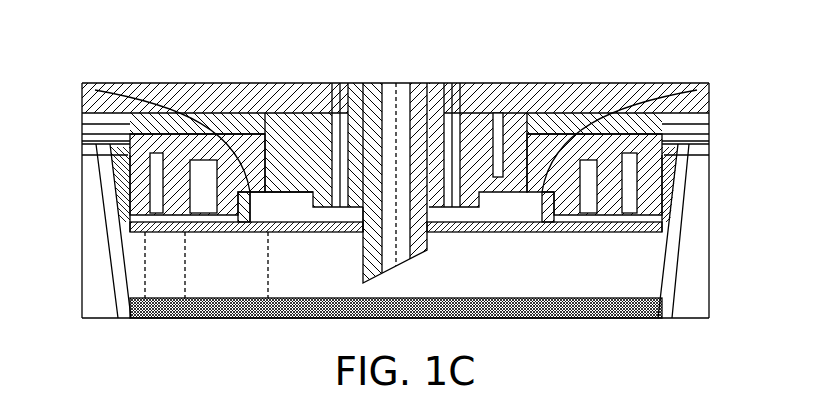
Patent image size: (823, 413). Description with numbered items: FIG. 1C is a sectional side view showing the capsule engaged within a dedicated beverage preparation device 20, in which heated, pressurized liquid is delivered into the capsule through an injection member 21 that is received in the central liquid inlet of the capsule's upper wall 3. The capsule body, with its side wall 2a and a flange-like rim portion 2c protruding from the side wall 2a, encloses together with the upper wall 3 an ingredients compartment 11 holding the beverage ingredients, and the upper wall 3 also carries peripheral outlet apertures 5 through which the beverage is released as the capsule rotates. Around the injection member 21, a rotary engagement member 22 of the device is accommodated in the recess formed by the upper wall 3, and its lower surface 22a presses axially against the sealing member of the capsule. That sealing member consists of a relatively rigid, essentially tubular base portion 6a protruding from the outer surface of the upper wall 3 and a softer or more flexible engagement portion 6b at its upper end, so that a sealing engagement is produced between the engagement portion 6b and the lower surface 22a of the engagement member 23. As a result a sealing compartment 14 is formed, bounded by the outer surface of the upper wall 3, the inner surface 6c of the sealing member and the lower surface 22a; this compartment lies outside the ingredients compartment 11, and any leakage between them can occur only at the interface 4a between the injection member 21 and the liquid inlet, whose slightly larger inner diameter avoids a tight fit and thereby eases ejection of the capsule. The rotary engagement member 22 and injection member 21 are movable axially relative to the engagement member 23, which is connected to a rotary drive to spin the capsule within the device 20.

The beverage preparation device 20 is at (716, 116).
The injection member 21 is at (421, 107).
The rotary engagement member 22 is at (590, 150).
The lower surface 22a is at (489, 110).
The base portion 6a is at (243, 225).
The engagement portion 6b is at (247, 182).
The inner surface 6c is at (542, 210).
The sealing compartment 14 is at (290, 215).
The interface 4a is at (364, 232).
The upper wall 3 is at (464, 232).
The peripheral outlet apertures 5 is at (133, 224).
The ingredients compartment 11 is at (173, 318).
The side wall 2a is at (127, 265).
The flange-like rim portion 2c is at (708, 160).
The engagement member 23 is at (684, 238).